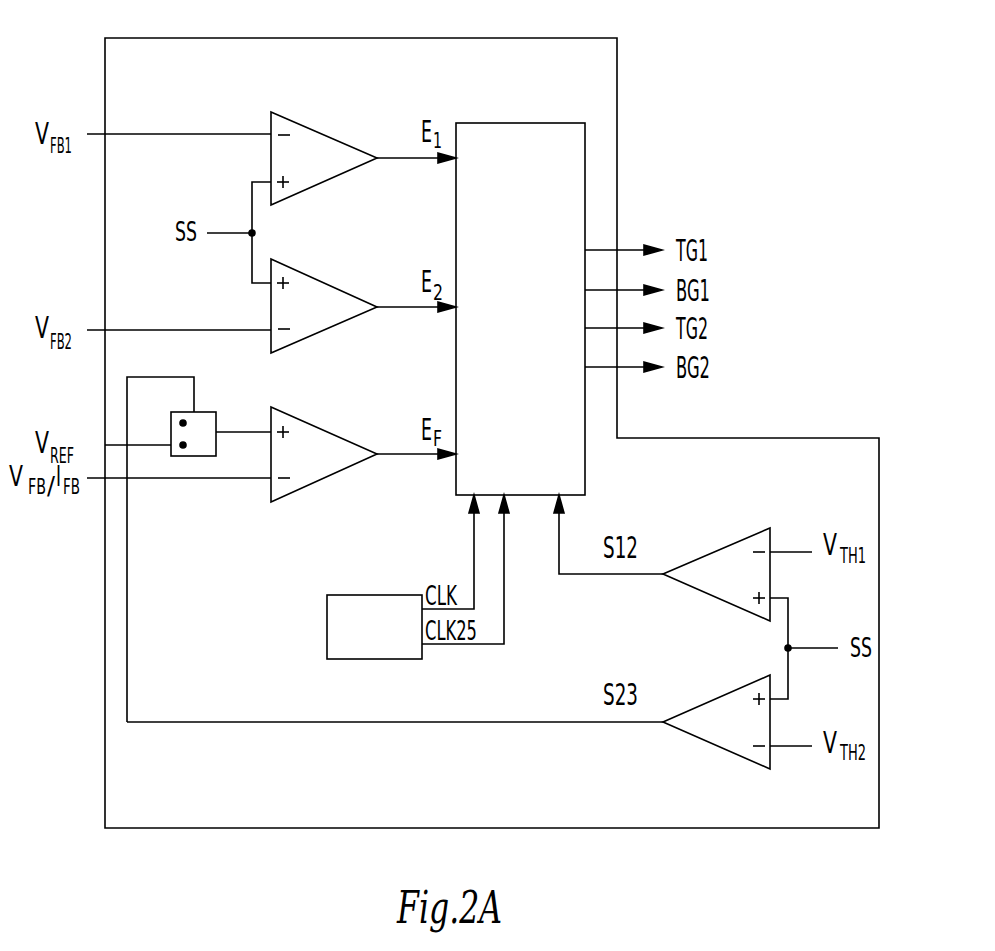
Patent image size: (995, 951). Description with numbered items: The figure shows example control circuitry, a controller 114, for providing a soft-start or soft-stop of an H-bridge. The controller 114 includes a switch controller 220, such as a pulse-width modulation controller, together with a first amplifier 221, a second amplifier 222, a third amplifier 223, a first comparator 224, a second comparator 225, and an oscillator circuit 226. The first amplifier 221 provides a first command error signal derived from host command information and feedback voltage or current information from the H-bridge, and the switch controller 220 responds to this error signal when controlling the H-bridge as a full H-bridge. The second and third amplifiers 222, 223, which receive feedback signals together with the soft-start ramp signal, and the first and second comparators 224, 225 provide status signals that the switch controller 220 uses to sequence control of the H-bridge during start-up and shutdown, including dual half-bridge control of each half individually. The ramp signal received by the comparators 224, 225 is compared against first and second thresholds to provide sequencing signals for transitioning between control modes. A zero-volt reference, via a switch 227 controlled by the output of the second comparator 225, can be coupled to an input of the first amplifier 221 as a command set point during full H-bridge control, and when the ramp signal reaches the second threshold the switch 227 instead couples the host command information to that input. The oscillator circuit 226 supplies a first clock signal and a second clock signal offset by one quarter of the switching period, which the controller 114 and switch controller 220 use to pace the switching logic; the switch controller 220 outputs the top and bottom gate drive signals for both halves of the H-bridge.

The controller 114 is at (316, 38).
The switch controller 220 is at (519, 123).
The first amplifier 221 is at (325, 429).
The second amplifier 222 is at (325, 281).
The third amplifier 223 is at (325, 134).
The first comparator 224 is at (714, 551).
The second comparator 225 is at (714, 699).
The oscillator circuit 226 is at (372, 595).
The switch 227 is at (212, 411).